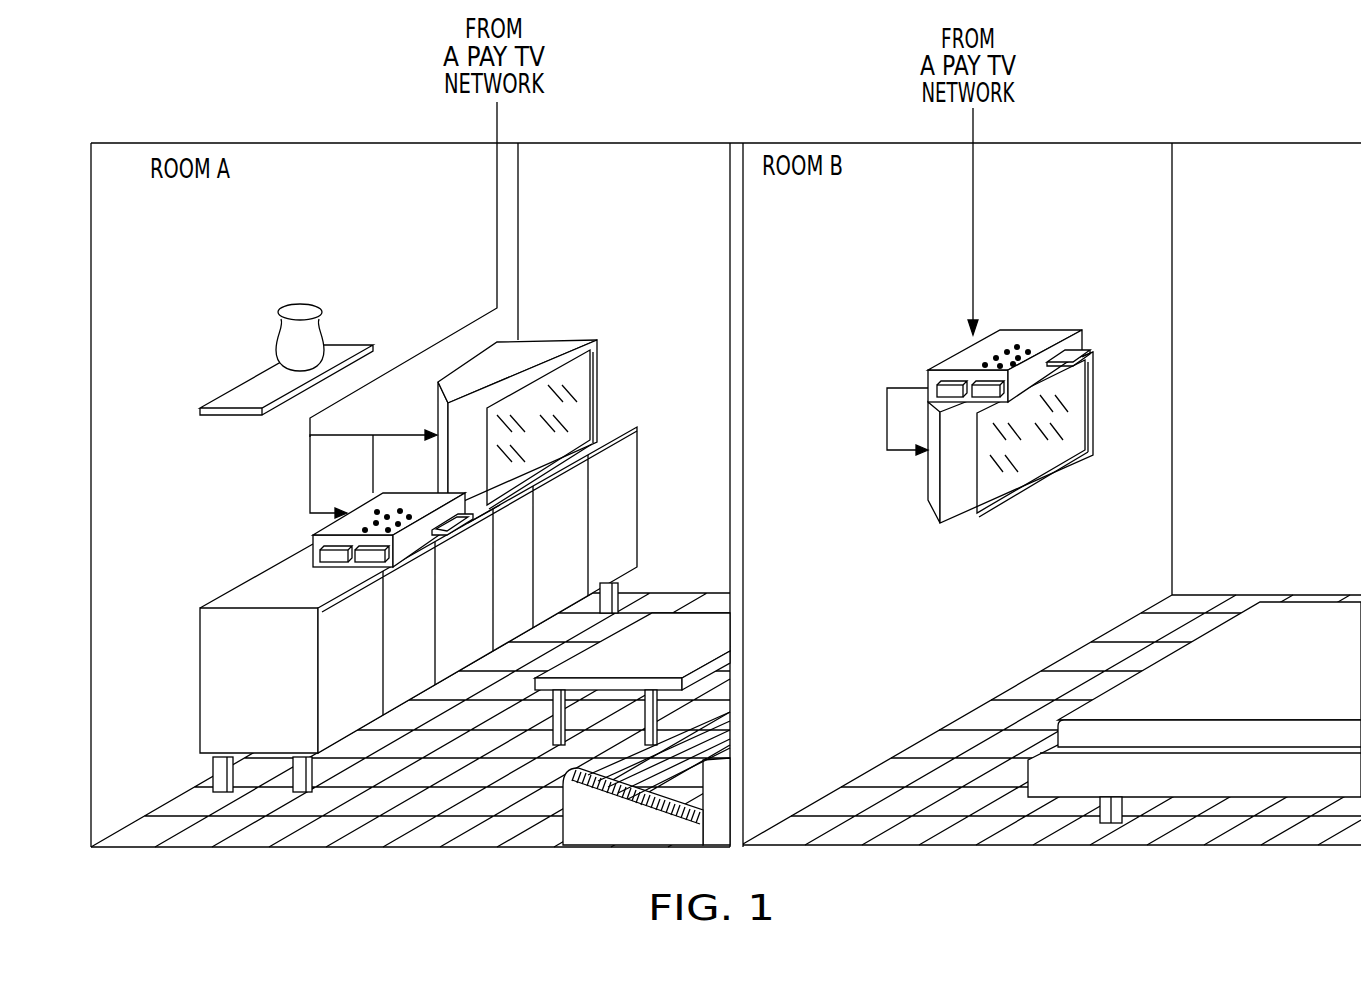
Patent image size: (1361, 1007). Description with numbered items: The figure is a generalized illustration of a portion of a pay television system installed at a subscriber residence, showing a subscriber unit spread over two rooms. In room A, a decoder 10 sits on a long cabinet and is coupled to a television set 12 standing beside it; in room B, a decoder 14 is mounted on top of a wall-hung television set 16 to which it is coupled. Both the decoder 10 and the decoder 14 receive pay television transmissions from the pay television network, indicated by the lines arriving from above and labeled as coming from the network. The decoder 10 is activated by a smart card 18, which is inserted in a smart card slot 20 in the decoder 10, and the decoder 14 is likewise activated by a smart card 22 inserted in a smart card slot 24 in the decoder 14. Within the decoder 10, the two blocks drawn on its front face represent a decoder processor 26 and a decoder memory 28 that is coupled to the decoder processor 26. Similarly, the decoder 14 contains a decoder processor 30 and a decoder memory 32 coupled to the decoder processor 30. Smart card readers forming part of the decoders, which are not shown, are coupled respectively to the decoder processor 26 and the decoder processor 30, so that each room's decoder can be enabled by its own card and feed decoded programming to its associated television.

The decoder 10 is at (365, 550).
The television set 12 is at (603, 340).
The decoder 14 is at (1010, 341).
The television set 16 is at (1047, 482).
The smart card 18 is at (466, 535).
The smart card slot 20 is at (490, 515).
The smart card 22 is at (1087, 348).
The smart card slot 24 is at (1060, 358).
The decoder processor 26 is at (370, 560).
The decoder memory 28 is at (325, 546).
The decoder processor 30 is at (987, 382).
The decoder memory 32 is at (950, 380).